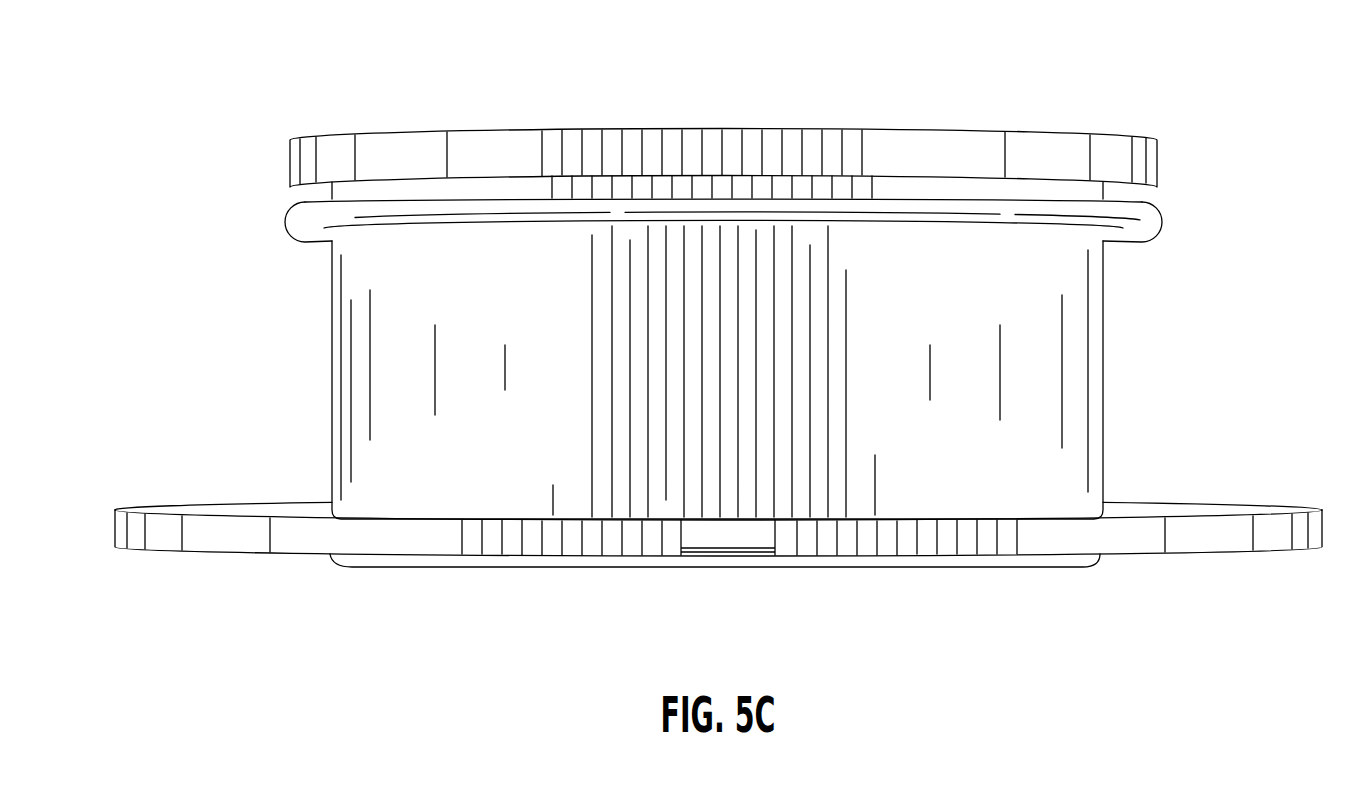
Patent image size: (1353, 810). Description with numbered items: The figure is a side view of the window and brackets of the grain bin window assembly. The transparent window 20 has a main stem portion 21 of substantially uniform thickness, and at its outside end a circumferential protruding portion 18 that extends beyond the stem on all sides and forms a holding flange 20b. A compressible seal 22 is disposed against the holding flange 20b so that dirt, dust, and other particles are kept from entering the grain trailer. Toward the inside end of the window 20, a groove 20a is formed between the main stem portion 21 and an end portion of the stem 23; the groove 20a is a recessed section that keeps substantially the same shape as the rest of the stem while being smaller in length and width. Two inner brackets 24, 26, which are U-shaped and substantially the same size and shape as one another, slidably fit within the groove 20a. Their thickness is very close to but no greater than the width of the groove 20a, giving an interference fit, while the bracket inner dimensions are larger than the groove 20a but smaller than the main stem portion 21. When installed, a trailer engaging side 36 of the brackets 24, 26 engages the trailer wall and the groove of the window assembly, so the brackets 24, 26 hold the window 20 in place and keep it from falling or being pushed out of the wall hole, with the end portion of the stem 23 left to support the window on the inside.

The circumferential protruding portion 18 is at (866, 145).
The transparent window 20 is at (483, 151).
The groove 20a is at (740, 538).
The holding flange 20b is at (319, 187).
The main stem portion 21 is at (1050, 322).
The compressible seal 22 is at (1160, 228).
The end portion of the stem 23 is at (770, 563).
The inner bracket 24 is at (162, 533).
The inner bracket 26 is at (1205, 533).
The trailer engaging side 36 is at (249, 510).